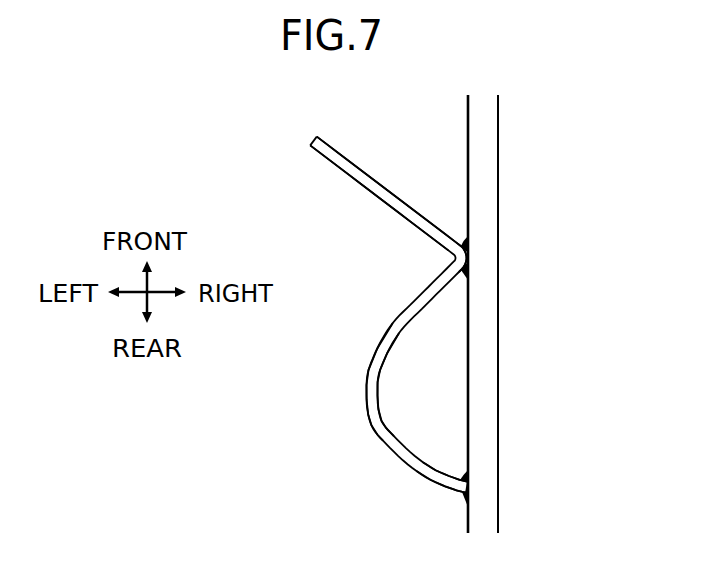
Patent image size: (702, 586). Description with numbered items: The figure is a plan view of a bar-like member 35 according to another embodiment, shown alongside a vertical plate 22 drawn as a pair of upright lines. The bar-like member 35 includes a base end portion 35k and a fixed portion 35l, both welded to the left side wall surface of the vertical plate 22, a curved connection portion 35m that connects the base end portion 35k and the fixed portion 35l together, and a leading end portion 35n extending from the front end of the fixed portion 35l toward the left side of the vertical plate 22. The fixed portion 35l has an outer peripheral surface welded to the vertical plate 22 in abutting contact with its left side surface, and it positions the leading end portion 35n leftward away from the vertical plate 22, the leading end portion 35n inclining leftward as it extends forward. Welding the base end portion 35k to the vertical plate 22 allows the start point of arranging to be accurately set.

The vertical plate 22 is at (495, 381).
The bar-like member 35 is at (362, 386).
The base end portion 35k is at (437, 477).
The fixed portion 35l is at (466, 259).
The curved connection portion 35m is at (378, 416).
The leading end portion 35n is at (392, 191).